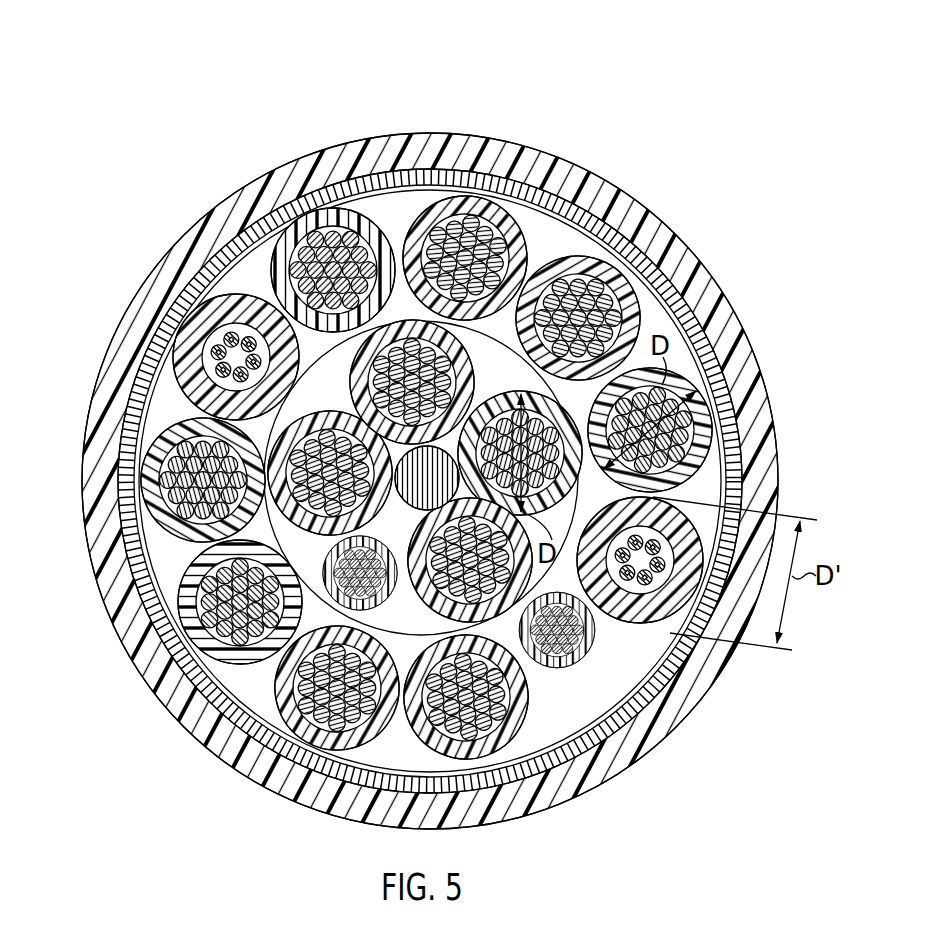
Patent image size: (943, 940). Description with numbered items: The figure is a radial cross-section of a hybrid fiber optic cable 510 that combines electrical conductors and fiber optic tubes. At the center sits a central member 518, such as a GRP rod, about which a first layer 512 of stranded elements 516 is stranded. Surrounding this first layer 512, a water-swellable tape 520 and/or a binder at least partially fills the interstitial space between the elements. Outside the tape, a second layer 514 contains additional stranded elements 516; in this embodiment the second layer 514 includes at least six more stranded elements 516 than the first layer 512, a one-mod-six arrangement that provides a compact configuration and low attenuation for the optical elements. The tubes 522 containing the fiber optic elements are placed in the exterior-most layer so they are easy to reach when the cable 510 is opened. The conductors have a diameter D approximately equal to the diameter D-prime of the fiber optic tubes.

The hybrid fiber optic cable 510 is at (706, 95).
The first layer 512 is at (627, 288).
The second layer 514 is at (567, 240).
The stranded elements 516 is at (400, 333).
The central member 518 is at (427, 478).
The water-swellable tape 520 is at (428, 638).
The tubes 522 is at (205, 325).